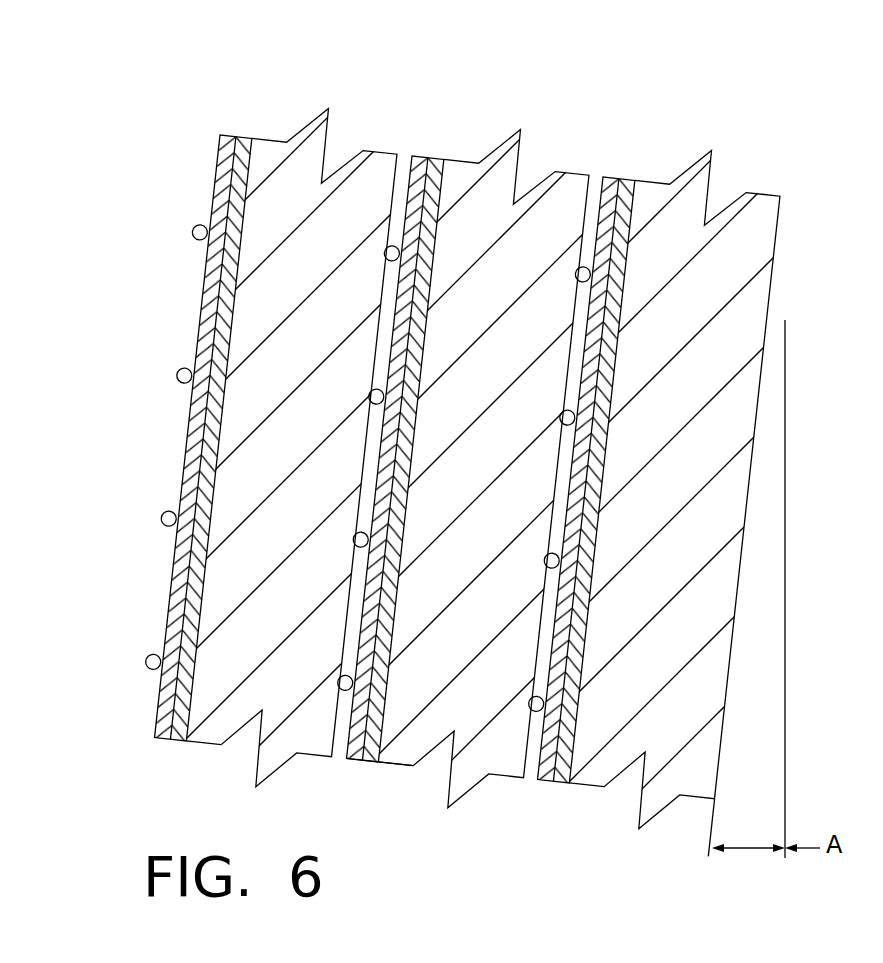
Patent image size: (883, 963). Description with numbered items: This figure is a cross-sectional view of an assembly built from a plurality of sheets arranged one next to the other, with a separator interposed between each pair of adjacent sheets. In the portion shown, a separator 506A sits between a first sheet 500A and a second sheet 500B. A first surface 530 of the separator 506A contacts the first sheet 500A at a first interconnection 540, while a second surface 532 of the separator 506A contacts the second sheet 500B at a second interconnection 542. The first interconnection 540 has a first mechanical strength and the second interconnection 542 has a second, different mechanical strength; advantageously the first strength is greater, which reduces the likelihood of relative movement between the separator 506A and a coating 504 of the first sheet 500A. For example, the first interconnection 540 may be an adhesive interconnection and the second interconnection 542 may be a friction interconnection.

The first sheet 500A is at (497, 777).
The second sheet 500B is at (207, 740).
The coating 504 is at (438, 163).
The separator 506A is at (352, 778).
The first surface 530 is at (384, 704).
The second surface 532 is at (338, 770).
The first interconnection 540 is at (430, 140).
The second interconnection 542 is at (400, 133).